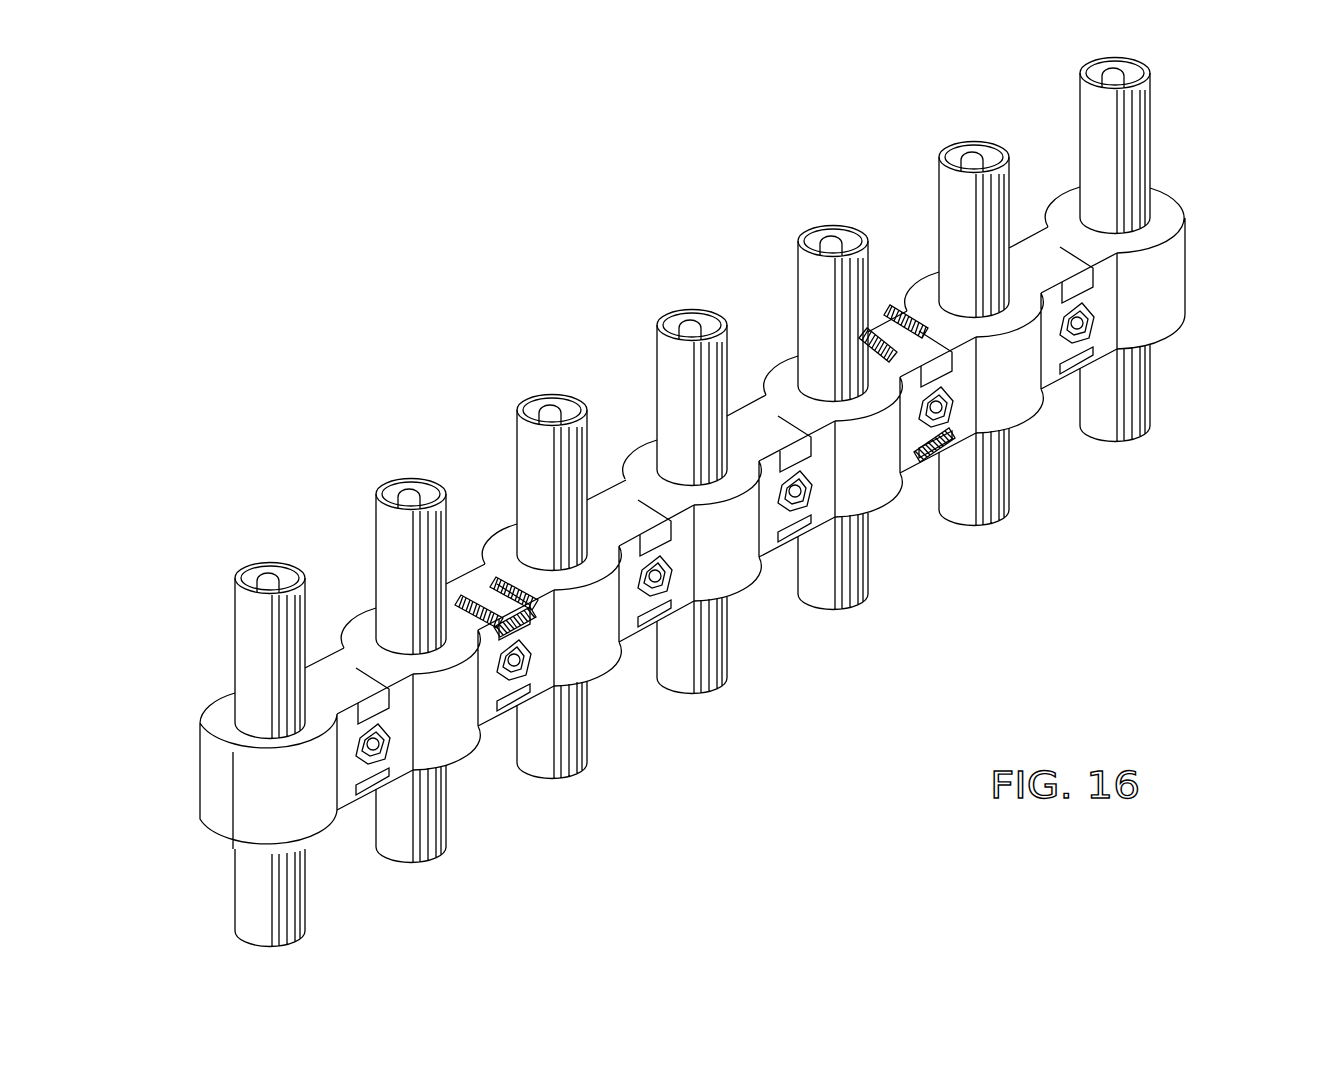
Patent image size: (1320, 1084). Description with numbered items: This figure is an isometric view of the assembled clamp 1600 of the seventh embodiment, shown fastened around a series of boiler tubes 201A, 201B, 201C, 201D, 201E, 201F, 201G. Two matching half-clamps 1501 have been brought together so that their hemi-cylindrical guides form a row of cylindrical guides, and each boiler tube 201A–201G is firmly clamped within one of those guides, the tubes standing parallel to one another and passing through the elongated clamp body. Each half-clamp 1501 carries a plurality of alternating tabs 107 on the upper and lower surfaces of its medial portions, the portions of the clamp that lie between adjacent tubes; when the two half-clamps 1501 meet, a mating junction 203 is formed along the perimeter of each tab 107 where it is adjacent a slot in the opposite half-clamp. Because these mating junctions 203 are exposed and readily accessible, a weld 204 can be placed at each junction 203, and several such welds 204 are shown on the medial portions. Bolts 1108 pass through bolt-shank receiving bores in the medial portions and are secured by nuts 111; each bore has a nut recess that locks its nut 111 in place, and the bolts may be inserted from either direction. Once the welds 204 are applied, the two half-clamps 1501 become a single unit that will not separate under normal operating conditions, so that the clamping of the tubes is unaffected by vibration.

The header assembly 1600 is at (1172, 178).
The mating junction 203 is at (785, 395).
The half-clamp 1501 is at (248, 828).
The tab 107 is at (325, 667).
The boiler tube 201A is at (250, 625).
The boiler tube 201B is at (390, 540).
The boiler tube 201C is at (530, 460).
The boiler tube 201D is at (673, 372).
The boiler tube 201E is at (812, 290).
The boiler tube 201F is at (955, 205).
The boiler tube 201G is at (1095, 115).
The nut 111 is at (1068, 345).
The bolt 1108 is at (1085, 325).
The weld 204 is at (487, 592).